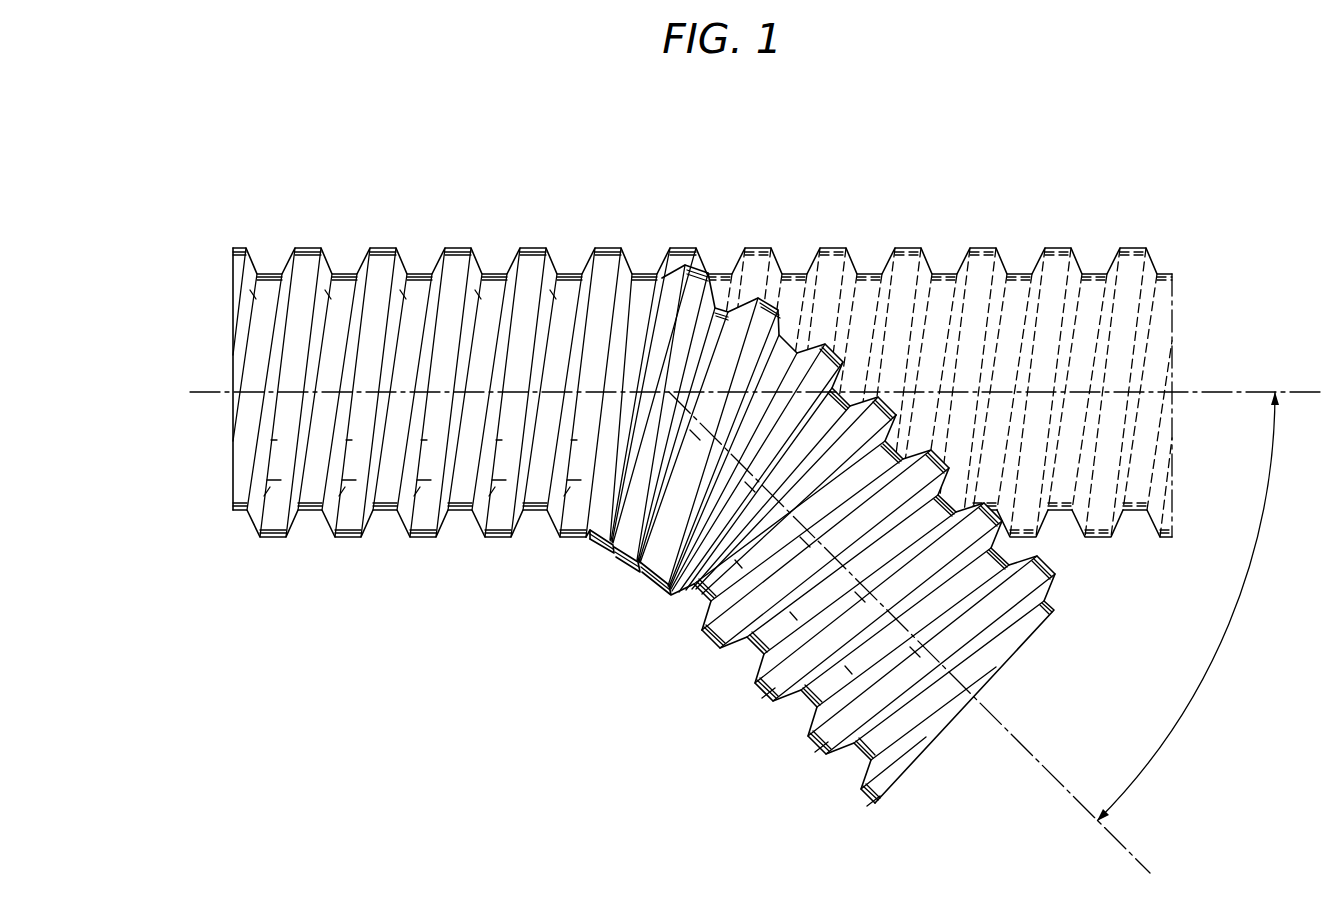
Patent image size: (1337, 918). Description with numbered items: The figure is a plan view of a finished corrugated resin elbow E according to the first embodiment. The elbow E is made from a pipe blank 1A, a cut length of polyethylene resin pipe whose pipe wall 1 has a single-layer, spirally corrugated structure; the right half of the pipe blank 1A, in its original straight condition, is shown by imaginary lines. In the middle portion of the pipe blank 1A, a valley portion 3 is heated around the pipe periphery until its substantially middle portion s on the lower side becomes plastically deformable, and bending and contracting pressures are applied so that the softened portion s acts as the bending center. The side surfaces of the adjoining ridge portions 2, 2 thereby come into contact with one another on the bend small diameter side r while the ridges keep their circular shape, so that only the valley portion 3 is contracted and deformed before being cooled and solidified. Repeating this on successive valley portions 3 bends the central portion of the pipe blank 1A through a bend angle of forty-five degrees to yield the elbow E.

The elbow E is at (320, 225).
The pipe wall 1 is at (377, 248).
The pipe blank 1A is at (1057, 258).
The ridge portions 2 is at (670, 590).
The valley portion 3 is at (797, 347).
The substantially middle portion of the heated valley portion s is at (588, 546).
The bend small diameter side r is at (612, 562).